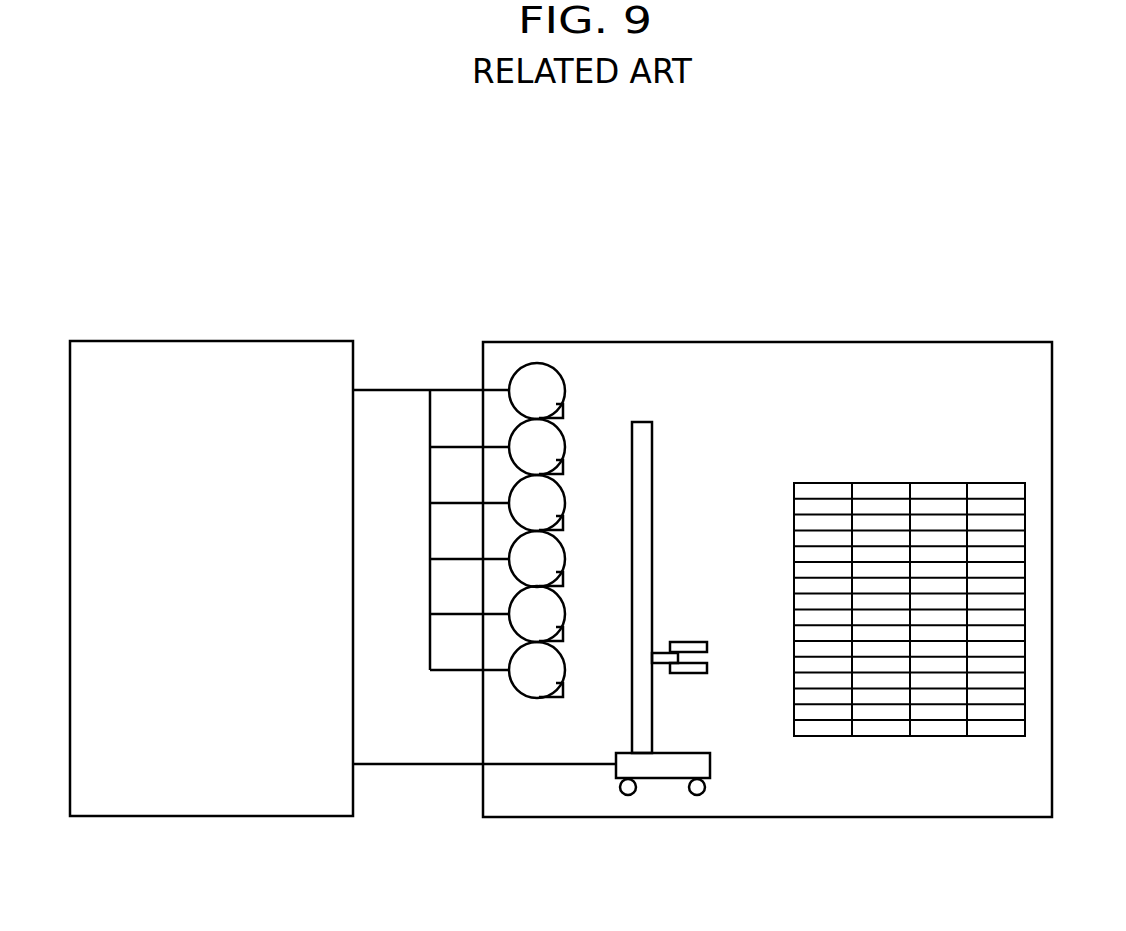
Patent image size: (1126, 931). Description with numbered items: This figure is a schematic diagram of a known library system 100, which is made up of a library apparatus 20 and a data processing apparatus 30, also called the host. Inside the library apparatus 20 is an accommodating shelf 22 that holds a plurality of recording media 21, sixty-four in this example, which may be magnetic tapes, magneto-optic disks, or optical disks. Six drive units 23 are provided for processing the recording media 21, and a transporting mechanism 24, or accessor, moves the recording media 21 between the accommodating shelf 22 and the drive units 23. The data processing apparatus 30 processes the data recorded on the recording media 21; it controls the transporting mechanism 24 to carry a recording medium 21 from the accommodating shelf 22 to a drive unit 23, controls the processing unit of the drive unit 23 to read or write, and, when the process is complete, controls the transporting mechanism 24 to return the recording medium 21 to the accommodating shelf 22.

The library system 100 is at (476, 293).
The data processing apparatus 30 is at (226, 341).
The library apparatus 20 is at (782, 342).
The drive unit 23 is at (567, 391).
The transporting mechanism 24 is at (660, 779).
The recording medium 21 is at (1017, 492).
The accommodating shelf 22 is at (1027, 588).